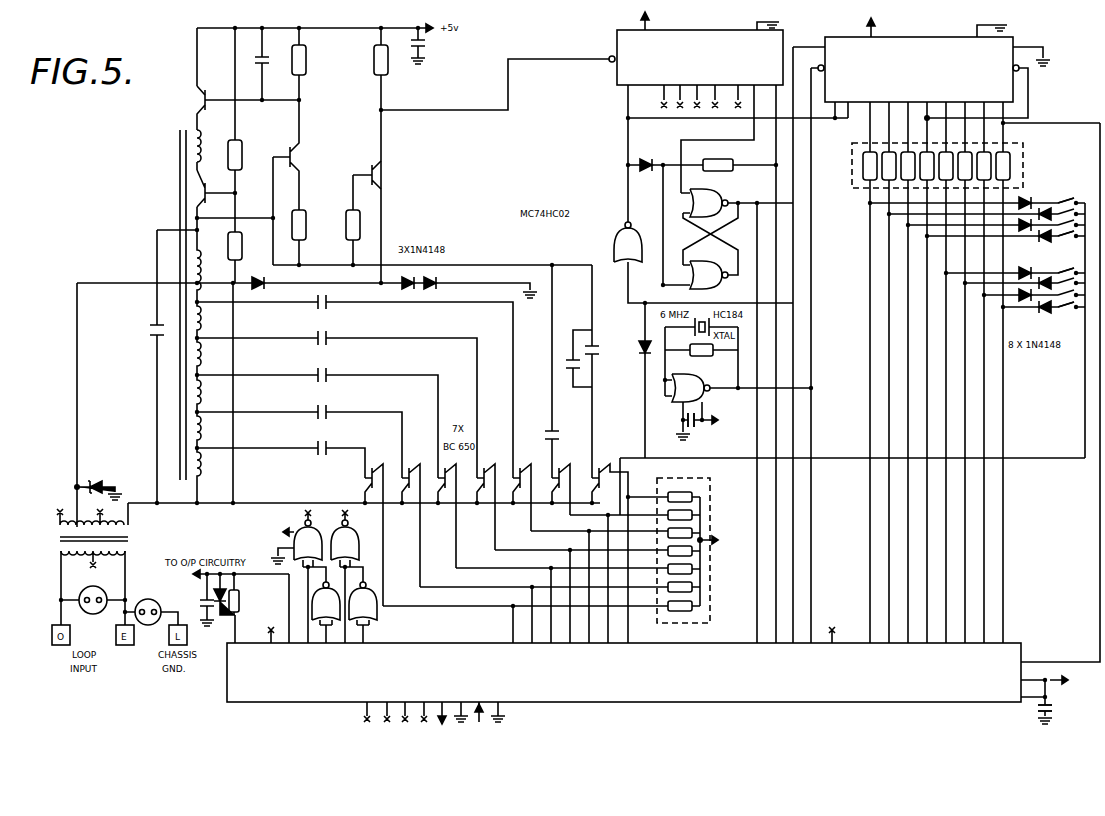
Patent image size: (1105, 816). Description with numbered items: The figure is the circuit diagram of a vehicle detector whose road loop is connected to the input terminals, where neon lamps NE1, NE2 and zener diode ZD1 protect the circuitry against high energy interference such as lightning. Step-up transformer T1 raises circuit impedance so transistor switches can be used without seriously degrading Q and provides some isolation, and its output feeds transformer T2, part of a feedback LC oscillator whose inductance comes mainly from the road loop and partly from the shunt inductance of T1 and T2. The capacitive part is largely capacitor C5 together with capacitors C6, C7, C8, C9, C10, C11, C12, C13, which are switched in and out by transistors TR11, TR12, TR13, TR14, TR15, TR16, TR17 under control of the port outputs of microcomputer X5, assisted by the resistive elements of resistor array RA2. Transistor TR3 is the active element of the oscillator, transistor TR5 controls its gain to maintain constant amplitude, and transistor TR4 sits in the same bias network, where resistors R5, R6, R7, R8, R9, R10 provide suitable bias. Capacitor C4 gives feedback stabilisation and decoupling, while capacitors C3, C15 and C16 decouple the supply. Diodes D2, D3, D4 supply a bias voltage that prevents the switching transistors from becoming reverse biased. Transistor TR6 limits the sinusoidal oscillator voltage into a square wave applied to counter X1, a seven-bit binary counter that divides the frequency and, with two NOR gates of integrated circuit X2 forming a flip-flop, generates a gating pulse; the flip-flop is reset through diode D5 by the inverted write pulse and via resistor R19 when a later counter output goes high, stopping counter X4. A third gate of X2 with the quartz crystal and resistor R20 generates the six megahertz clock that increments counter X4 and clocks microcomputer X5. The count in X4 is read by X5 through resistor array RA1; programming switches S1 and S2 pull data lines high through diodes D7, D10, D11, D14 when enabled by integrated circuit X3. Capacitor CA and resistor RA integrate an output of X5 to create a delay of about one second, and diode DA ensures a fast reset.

The transistor TR3 is at (216, 190).
The transistor TR4 is at (195, 105).
The transistor TR5 is at (304, 182).
The transistor TR6 is at (384, 181).
The transistor TR11 is at (362, 535).
The transistor TR12 is at (399, 525).
The transistor TR13 is at (435, 516).
The transistor TR14 is at (474, 507).
The transistor TR15 is at (510, 497).
The transistor TR16 is at (549, 489).
The transistor TR17 is at (598, 553).
The resistor R5 is at (361, 237).
The resistor R6 is at (389, 155).
The resistor R7 is at (307, 237).
The resistor R8 is at (307, 64).
The resistor R9 is at (243, 238).
The resistor R10 is at (246, 110).
The resistor R19 is at (718, 158).
The resistor R20 is at (701, 361).
The capacitor C3 is at (421, 46).
The capacitor C4 is at (273, 64).
The capacitor C5 is at (148, 366).
The capacitor C6 is at (334, 457).
The capacitor C7 is at (352, 439).
The capacitor C8 is at (370, 420).
The capacitor C9 is at (390, 402).
The capacitor C10 is at (408, 384).
The capacitor C11 is at (543, 371).
The capacitor C12 is at (574, 367).
The capacitor C13 is at (601, 371).
The capacitor C15 is at (700, 426).
The capacitor C16 is at (1055, 704).
The diode D2 is at (257, 277).
The diode D3 is at (405, 278).
The diode D4 is at (432, 278).
The diode D5 is at (644, 159).
The diode D7 is at (1030, 197).
The diode D10 is at (1049, 243).
The diode D11 is at (1027, 268).
The diode D14 is at (1045, 313).
The zener diode ZD1 is at (100, 484).
The step-up transformer T1 is at (97, 537).
The transformer T2 is at (189, 309).
The neon lamp NE1 is at (93, 594).
The neon lamp NE2 is at (148, 604).
The digital counter integrated circuit X1 is at (691, 327).
The NOR gate integrated circuit X2 is at (713, 345).
The NOR gate integrated circuit X3 is at (296, 573).
The counter X4 is at (921, 330).
The microcomputer X5 is at (662, 428).
The resistor array RA1 is at (950, 167).
The resistor array RA2 is at (693, 550).
The switch S1 is at (1067, 210).
The switch S2 is at (1068, 296).
The capacitor CA is at (200, 600).
The diode DA is at (224, 602).
The resistor RA is at (241, 594).